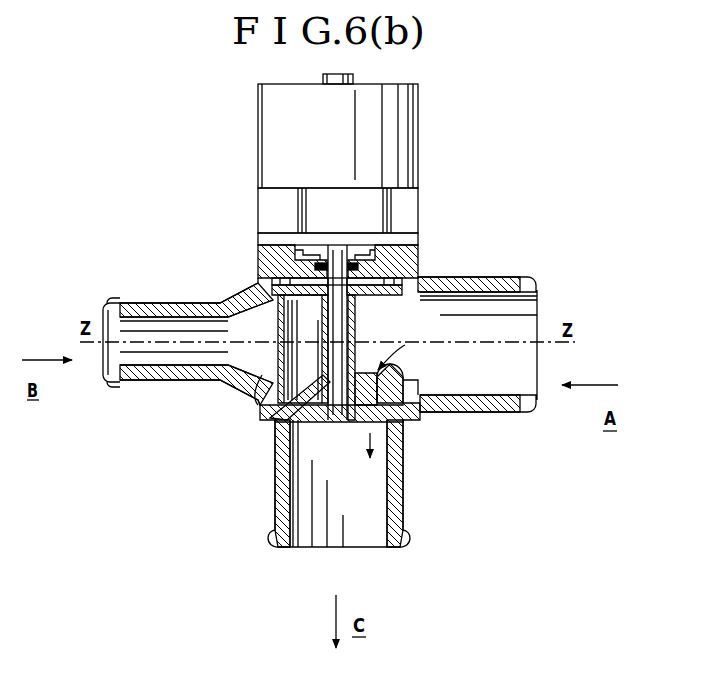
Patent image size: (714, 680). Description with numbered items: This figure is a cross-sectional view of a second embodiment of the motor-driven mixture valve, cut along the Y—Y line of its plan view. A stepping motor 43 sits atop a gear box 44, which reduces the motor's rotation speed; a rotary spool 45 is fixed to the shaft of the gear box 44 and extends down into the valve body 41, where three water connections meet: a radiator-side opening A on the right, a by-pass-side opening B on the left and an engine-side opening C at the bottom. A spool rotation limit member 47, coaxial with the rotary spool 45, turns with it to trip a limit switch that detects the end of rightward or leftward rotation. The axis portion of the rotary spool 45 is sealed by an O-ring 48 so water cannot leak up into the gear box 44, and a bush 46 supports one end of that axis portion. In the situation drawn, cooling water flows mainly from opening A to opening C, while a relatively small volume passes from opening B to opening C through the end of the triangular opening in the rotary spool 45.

The valve body 41 is at (413, 257).
The stepping motor 43 is at (405, 105).
The gear box 44 is at (408, 198).
The rotary spool 45 is at (262, 375).
The bush 46 is at (393, 437).
The spool rotation limit member 47 is at (306, 252).
The O-ring 48 is at (300, 282).